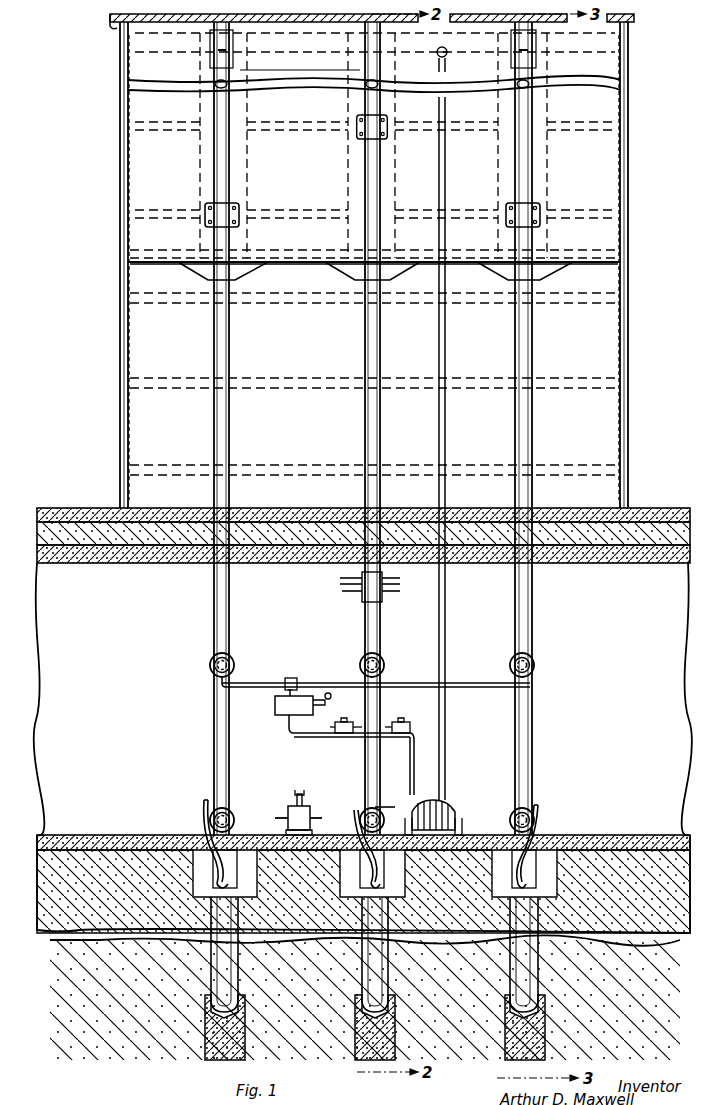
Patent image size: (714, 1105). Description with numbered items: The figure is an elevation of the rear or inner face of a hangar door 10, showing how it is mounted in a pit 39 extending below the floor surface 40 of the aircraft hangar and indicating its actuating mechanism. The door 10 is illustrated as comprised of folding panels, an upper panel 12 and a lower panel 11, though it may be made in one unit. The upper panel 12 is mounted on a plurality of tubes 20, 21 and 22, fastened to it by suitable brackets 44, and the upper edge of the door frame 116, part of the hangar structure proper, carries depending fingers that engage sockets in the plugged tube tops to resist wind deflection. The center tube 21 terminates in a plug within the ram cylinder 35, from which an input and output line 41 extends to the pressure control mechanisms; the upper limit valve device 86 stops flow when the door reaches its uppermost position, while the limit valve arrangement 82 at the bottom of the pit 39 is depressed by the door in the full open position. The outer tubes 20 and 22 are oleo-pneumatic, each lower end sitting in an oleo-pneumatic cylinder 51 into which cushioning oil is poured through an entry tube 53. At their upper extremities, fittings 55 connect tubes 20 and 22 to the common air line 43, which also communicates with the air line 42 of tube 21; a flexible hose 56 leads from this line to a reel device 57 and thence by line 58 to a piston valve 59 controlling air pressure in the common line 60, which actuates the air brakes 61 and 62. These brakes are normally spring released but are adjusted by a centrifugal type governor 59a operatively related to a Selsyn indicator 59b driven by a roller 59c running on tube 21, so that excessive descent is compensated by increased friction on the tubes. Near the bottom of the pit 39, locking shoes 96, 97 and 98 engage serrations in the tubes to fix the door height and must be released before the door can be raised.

The door 10 is at (622, 266).
The lower panel 11 is at (605, 362).
The upper door panel 12 is at (604, 168).
The door frame 116 is at (113, 28).
The fittings 55 is at (210, 52).
The common air line 43 is at (312, 58).
The air line 42 is at (375, 68).
The brackets 44 is at (242, 212).
The flexible hose 56 is at (446, 186).
The tube 20 is at (212, 340).
The tube 21 is at (363, 340).
The tube 22 is at (513, 340).
The floor surface 40 is at (644, 512).
The pit 39 is at (646, 738).
The upper limit valve device 86 is at (372, 594).
The air brake 61 is at (210, 660).
The air brake 62 is at (386, 660).
The common line 60 is at (316, 686).
The piston valve 59 is at (280, 712).
The centrifugal type governor 59a is at (346, 720).
The Selsyn indicator 59b is at (406, 720).
The roller 59c is at (410, 755).
The line 58 is at (302, 738).
The locking shoe 96 is at (210, 798).
The locking shoe 97 is at (356, 808).
The locking shoe 98 is at (534, 808).
The limit valve arrangement 82 is at (286, 802).
The input and output line 41 is at (358, 816).
The entry tube 53 is at (208, 820).
The reel device 57 is at (448, 804).
The oleo-pneumatic cylinder 51 is at (240, 978).
The ram cylinder 35 is at (388, 978).